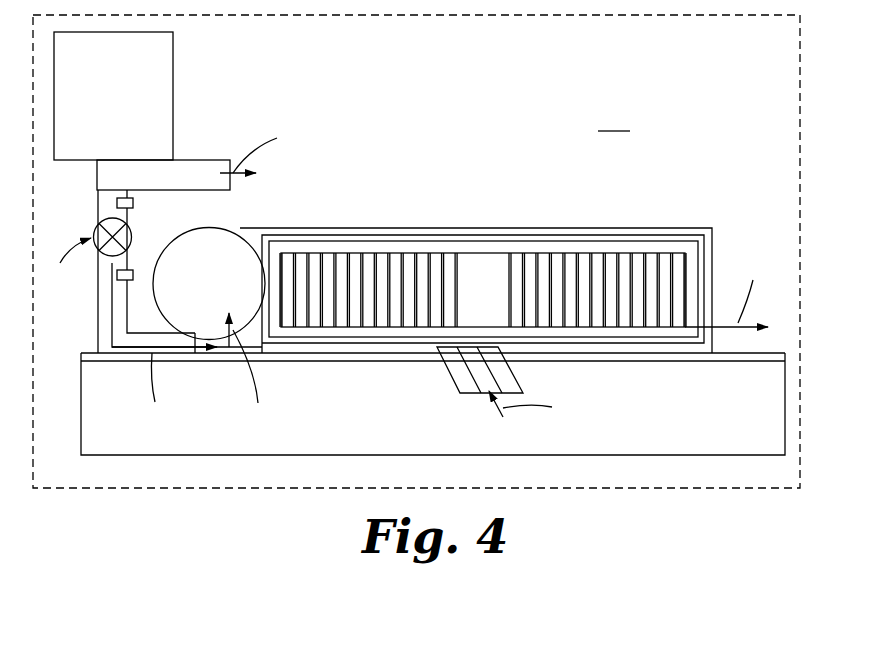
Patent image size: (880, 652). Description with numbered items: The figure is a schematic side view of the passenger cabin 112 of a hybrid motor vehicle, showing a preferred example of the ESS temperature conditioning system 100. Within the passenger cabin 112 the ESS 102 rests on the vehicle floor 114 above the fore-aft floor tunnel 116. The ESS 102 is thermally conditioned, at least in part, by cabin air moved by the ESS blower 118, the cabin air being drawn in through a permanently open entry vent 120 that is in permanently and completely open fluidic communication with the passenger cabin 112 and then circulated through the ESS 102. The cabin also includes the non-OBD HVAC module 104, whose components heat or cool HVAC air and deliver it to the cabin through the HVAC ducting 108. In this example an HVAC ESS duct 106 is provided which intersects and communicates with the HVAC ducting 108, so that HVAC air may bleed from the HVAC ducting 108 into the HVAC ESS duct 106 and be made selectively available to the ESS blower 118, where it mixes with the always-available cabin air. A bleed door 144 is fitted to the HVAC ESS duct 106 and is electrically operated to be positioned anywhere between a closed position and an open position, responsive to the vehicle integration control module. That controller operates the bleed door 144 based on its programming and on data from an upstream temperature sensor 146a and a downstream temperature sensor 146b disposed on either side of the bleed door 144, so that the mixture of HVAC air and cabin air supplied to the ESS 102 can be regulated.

The ESS temperature conditioning system 100 is at (375, 156).
The ESS 102 is at (442, 233).
The HVAC module 104 is at (173, 62).
The HVAC ESS duct 106 is at (98, 280).
The HVAC ducting 108 is at (210, 158).
The passenger cabin 112 is at (171, 509).
The vehicle floor 114 is at (92, 353).
The floor tunnel 116 is at (702, 411).
The ESS blower 118 is at (222, 227).
The entry vent 120 is at (515, 377).
The bleed door 144 is at (86, 252).
The upstream temperature sensor 146a is at (135, 203).
The downstream temperature sensor 146b is at (128, 268).